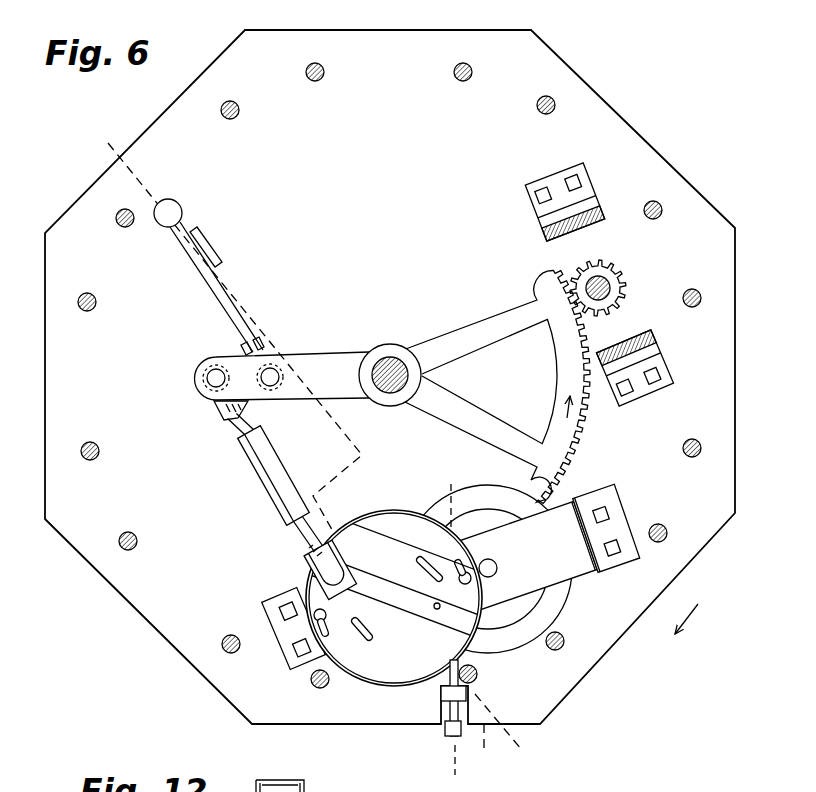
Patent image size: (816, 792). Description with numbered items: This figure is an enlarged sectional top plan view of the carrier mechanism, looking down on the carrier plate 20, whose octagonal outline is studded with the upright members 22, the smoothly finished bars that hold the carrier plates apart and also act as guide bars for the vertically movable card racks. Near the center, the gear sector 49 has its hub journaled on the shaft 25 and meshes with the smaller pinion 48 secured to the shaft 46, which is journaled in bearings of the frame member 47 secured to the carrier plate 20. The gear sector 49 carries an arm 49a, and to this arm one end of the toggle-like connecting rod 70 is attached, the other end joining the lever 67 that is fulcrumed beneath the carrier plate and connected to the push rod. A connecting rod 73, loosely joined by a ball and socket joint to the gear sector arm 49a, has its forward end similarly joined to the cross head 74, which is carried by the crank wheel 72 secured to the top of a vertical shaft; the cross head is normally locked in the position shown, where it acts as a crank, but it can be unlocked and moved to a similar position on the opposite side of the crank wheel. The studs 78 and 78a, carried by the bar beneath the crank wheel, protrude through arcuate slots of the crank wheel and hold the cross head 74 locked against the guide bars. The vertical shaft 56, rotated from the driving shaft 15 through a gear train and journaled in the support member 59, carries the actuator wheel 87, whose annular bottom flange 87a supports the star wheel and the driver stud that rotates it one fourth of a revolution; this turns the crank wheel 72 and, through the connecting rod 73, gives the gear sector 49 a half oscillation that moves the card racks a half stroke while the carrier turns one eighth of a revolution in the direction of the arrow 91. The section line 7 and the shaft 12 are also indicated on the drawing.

In FIG. 6, the section line 7- 7 is at (35, 198).
In FIG. 6, the shaft 12 is at (454, 630).
In FIG. 6, the driving shaft 15 is at (367, 557).
In FIG. 6, the carrier plate 20 is at (735, 472).
In FIG. 6, the upright members 22 is at (316, 81).
In FIG. 6, the shaft 25 is at (400, 358).
In FIG. 6, the shaft 46 is at (608, 278).
In FIG. 6, the frame member 47 is at (591, 202).
In FIG. 6, the pinion 48 is at (626, 286).
In FIG. 6, the gear sector 49 is at (502, 337).
In FIG. 6, the arm 49a is at (318, 357).
In FIG. 6, the vertical shaft 56 is at (497, 564).
In FIG. 6, the support member 59 is at (585, 571).
In FIG. 6, the lever 67 is at (205, 252).
In FIG. 6, the connecting rod 70 is at (213, 295).
In FIG. 6, the crank wheel 72 is at (367, 686).
In FIG. 6, the connecting rod 73 is at (270, 487).
In FIG. 6, the cross head 74 is at (355, 552).
In FIG. 12, the cross head 74 is at (318, 791).
In FIG. 6, the stud 78 is at (352, 591).
In FIG. 6, the stud 78a is at (438, 609).
In FIG. 6, the actuator wheel 87 is at (473, 519).
In FIG. 6, the annular bottom flange 87a is at (556, 604).
In FIG. 6, the direction arrow 91 is at (691, 622).